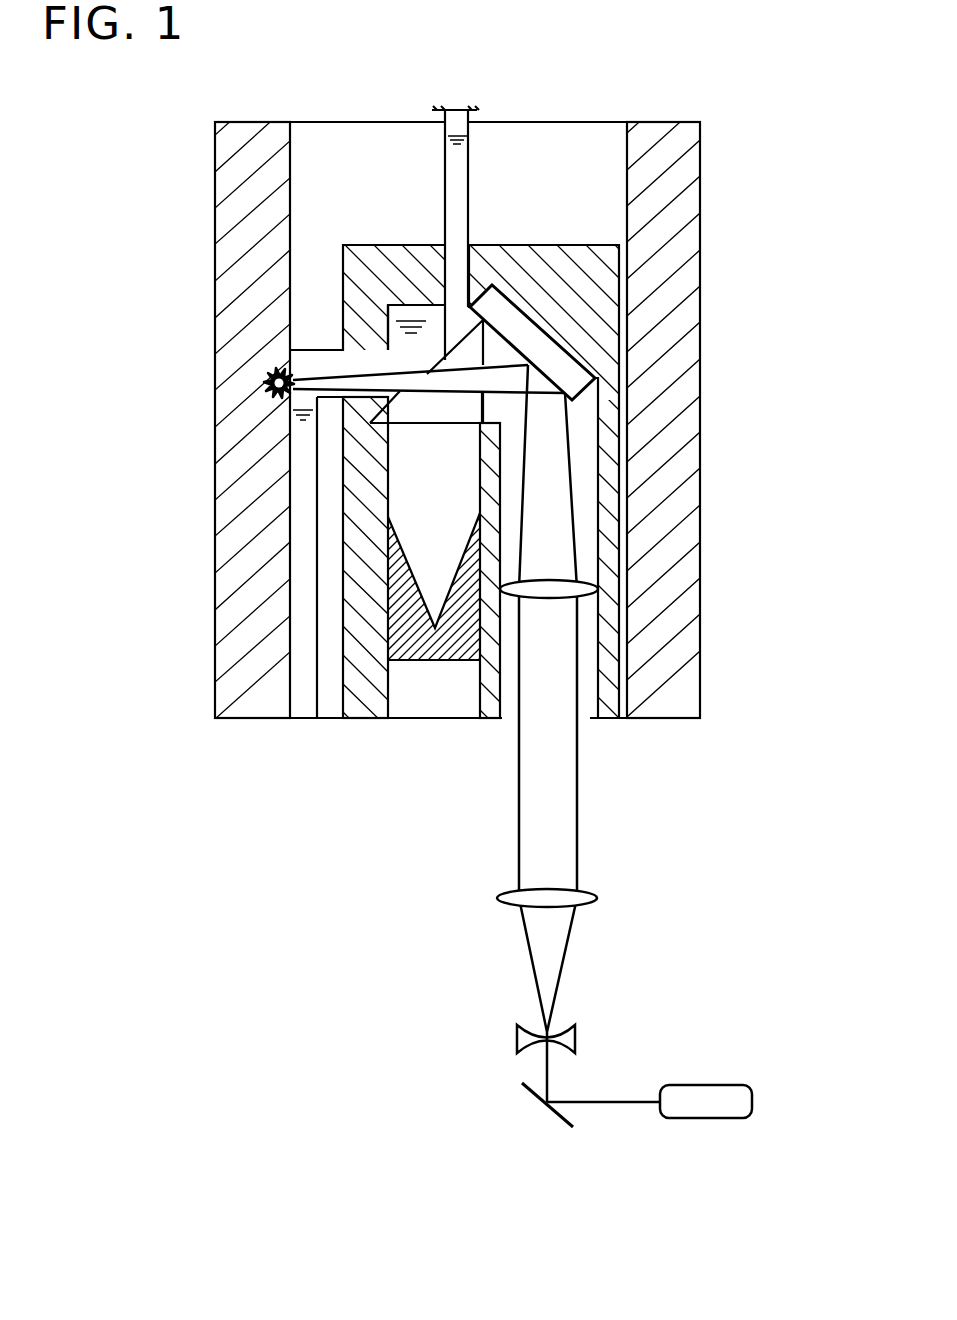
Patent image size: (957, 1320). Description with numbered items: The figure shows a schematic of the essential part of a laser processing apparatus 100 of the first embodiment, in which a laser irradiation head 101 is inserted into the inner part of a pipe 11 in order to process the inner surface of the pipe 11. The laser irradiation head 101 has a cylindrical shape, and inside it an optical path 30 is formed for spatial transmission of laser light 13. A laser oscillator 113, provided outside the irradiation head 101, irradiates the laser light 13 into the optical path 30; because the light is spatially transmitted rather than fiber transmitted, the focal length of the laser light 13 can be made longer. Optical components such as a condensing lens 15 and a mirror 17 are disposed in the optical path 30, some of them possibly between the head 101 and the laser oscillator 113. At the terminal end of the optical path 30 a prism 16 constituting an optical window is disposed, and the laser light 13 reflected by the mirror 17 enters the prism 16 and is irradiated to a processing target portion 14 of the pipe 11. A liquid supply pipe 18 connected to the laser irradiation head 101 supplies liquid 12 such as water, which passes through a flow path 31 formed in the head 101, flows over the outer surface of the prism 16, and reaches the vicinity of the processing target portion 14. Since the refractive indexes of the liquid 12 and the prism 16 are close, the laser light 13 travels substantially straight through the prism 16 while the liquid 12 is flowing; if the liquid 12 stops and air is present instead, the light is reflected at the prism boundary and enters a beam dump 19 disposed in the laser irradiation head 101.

The laser processing apparatus 100 is at (582, 146).
The laser irradiation head 101 is at (500, 245).
The pipe 11 is at (686, 176).
The liquid 12 is at (300, 500).
The laser light 13 is at (568, 793).
The processing target portion 14 is at (265, 381).
The condensing lens 15 is at (600, 588).
The prism 16 is at (442, 303).
The mirror 17 is at (512, 327).
The liquid supply pipe 18 is at (443, 163).
The beam dump 19 is at (440, 645).
The optical path 30 is at (585, 440).
The flow path 31 is at (457, 360).
The laser oscillator 113 is at (732, 1088).